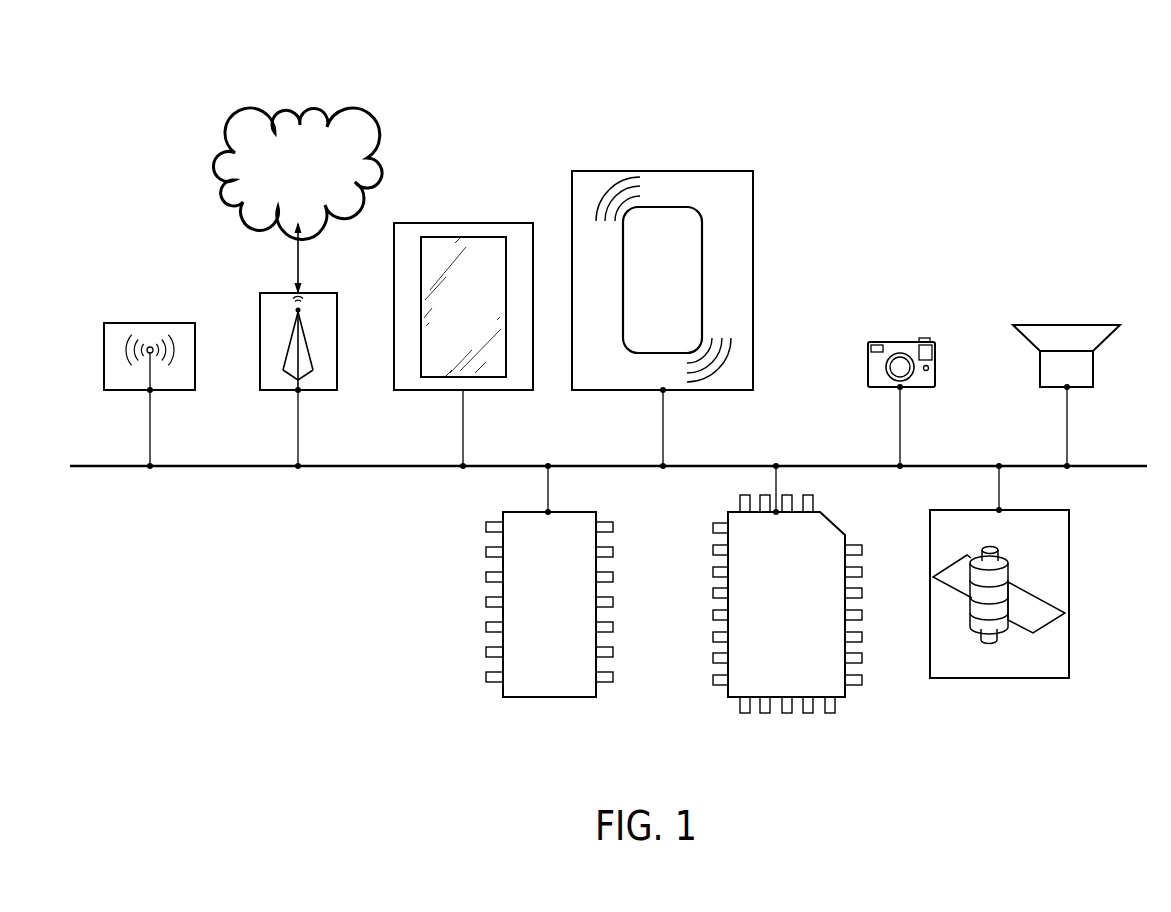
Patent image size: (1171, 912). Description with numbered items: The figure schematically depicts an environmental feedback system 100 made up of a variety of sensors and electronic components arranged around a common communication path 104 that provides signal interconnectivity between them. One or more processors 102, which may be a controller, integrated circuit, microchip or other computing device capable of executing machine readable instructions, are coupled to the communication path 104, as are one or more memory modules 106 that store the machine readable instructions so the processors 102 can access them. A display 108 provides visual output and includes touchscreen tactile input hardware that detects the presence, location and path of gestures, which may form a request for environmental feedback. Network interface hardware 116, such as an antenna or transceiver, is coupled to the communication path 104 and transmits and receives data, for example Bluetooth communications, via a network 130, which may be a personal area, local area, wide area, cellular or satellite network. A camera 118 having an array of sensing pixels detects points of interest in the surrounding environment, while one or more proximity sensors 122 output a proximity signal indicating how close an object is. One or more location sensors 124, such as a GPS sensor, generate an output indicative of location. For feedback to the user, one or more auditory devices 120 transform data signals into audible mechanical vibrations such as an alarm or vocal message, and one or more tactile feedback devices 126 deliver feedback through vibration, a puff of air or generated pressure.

The environmental feedback system 100 is at (1066, 246).
The processor 102 is at (733, 698).
The communication path 104 is at (418, 468).
The memory module 106 is at (533, 698).
The display 108 is at (472, 223).
The network interface hardware 116 is at (260, 300).
The camera 118 is at (900, 342).
The auditory device 120 is at (1072, 325).
The proximity sensor 122 is at (120, 323).
The location sensor 124 is at (997, 679).
The tactile feedback device 126 is at (658, 171).
The network 130 is at (220, 168).